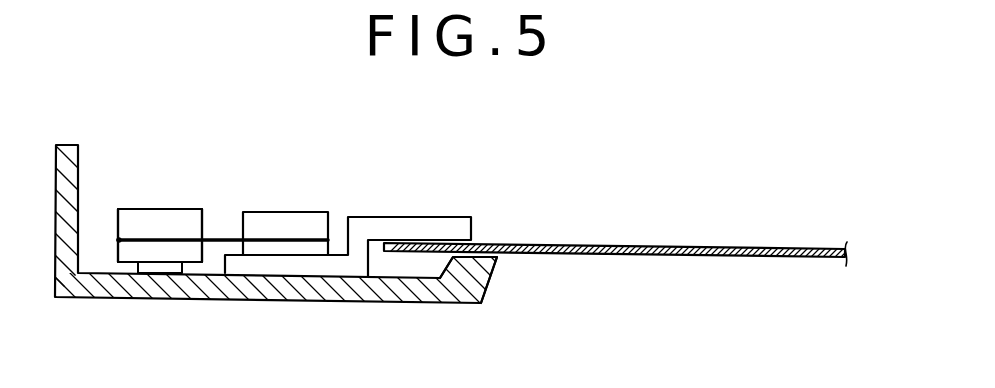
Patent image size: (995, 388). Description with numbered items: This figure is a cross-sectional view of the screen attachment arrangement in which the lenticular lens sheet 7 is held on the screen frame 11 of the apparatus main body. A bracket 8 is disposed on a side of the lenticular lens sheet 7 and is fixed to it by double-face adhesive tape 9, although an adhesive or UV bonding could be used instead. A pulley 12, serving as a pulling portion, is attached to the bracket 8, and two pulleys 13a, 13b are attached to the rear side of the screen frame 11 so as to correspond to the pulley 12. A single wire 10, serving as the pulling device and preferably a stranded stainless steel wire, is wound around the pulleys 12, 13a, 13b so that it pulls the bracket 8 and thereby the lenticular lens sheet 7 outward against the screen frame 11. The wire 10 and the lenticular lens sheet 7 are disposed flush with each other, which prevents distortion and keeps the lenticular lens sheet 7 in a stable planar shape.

The lenticular lens sheet 7 is at (627, 247).
The bracket 8 is at (378, 227).
The double-face adhesive tape 9 is at (452, 240).
The wire 10 is at (226, 238).
The screen frame 11 is at (272, 303).
The pulley 12 is at (285, 222).
The pulley 13a is at (155, 222).
The pulley 13b is at (160, 235).